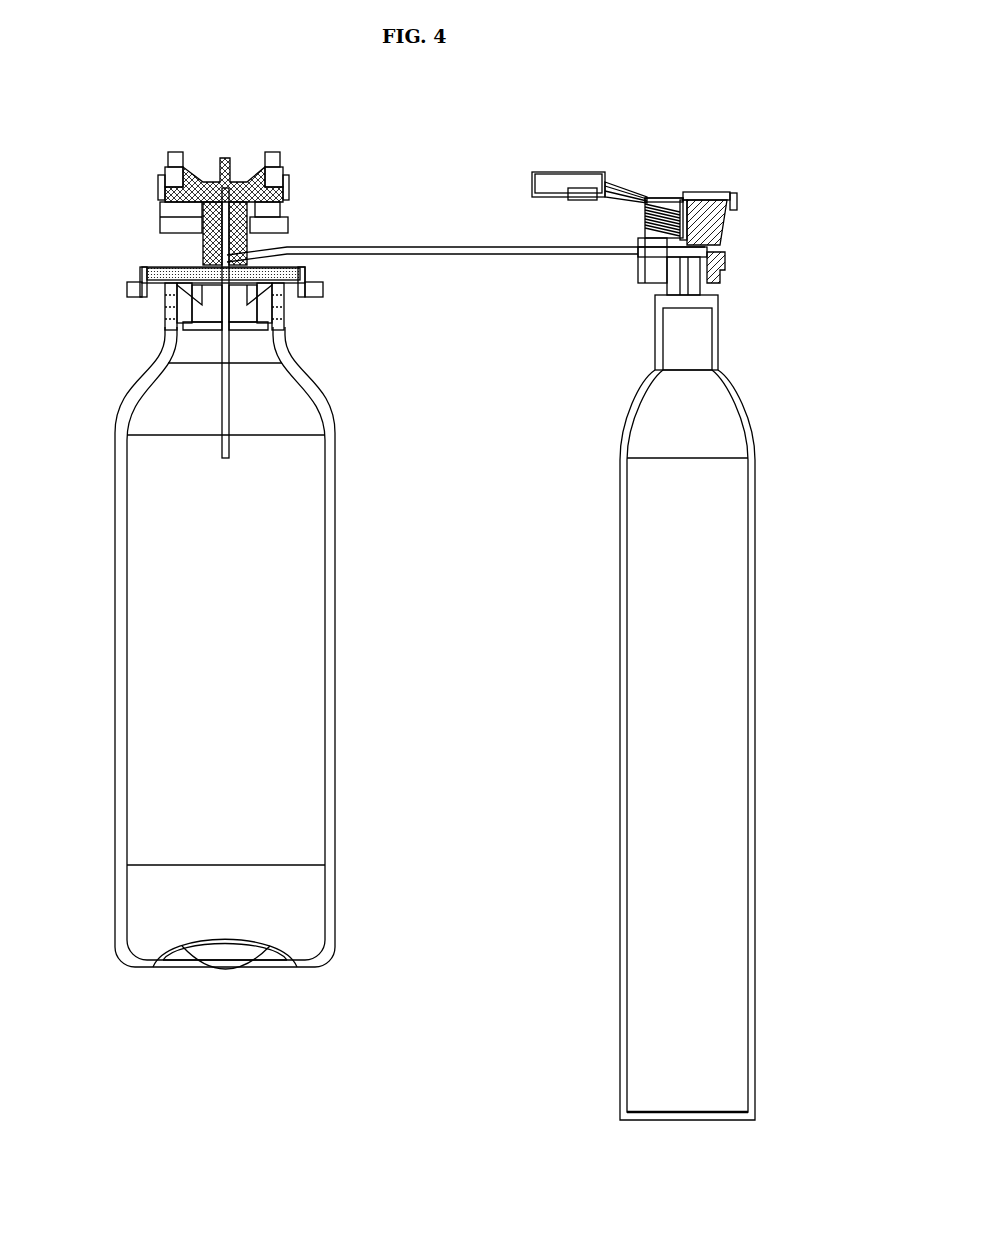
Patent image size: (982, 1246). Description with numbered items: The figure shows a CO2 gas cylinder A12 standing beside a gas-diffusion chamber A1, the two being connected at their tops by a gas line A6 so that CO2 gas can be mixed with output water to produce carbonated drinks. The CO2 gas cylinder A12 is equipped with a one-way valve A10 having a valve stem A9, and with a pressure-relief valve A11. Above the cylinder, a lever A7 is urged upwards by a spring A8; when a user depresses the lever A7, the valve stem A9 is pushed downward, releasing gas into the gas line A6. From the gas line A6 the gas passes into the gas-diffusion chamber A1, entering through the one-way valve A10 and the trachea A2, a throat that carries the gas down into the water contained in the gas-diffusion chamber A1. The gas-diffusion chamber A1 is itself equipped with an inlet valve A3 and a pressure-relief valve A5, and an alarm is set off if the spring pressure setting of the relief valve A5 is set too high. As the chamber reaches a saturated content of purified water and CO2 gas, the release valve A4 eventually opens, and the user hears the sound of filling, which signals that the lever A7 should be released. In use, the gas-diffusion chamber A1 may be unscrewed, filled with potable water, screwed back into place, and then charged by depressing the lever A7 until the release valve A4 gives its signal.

The gas-diffusion chamber A1 is at (153, 638).
The trachea A2 is at (222, 425).
The inlet valve A3 is at (205, 253).
The release valve A4 is at (160, 208).
The pressure-relief valve A5 is at (283, 220).
The gas line A6 is at (370, 247).
The lever A7 is at (557, 172).
The spring A8 is at (660, 197).
The valve stem A9 is at (733, 192).
The one-way valve A10 is at (683, 262).
The pressure-relief valve A11 is at (641, 268).
The CO2 gas cylinder A12 is at (730, 652).